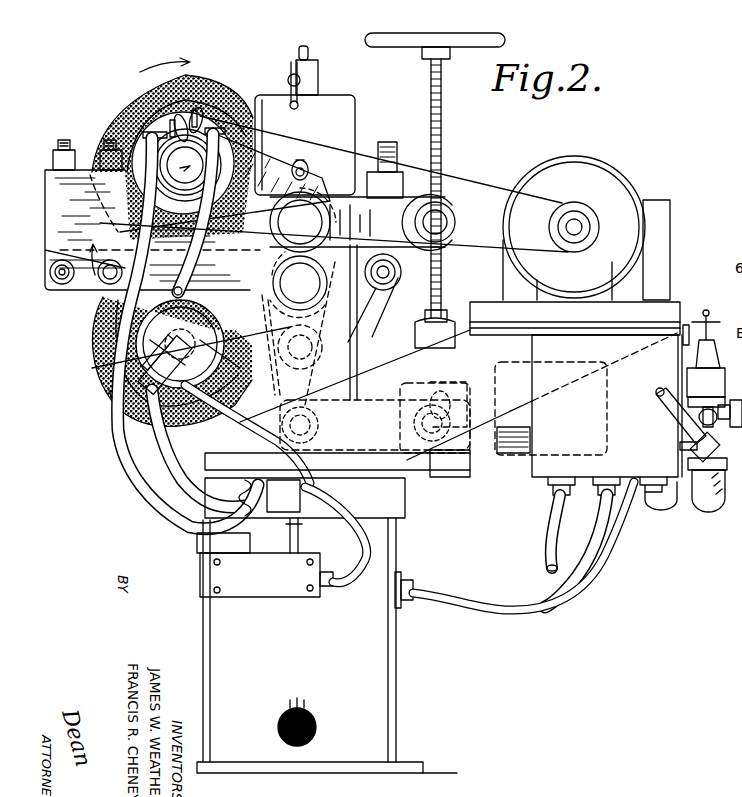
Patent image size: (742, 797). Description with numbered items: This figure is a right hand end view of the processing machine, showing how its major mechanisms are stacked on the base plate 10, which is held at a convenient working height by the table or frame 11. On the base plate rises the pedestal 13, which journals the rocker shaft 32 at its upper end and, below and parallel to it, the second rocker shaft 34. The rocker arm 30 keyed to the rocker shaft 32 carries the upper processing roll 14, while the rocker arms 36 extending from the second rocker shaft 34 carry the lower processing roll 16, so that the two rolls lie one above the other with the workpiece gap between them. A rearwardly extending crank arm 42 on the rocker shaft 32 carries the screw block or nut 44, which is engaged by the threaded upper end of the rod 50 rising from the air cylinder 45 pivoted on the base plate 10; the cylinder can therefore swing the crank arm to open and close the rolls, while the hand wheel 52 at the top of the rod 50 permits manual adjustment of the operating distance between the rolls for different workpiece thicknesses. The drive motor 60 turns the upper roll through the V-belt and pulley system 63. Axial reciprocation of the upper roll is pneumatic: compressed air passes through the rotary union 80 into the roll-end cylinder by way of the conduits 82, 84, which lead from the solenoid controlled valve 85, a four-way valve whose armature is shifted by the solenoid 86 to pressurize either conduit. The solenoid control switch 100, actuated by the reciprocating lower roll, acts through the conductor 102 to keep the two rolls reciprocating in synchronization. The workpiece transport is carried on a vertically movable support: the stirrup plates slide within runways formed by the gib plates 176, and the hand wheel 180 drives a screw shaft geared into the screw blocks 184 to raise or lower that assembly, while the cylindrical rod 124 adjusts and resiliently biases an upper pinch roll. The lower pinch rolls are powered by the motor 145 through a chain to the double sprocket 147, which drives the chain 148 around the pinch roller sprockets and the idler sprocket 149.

The base plate 10 is at (469, 486).
The table or frame 11 is at (410, 648).
The pedestal 13 is at (371, 358).
The processing roll 14 is at (130, 103).
The processing roll 16 is at (108, 392).
The rocker arm 30 is at (270, 172).
The rocker shaft 32 is at (303, 220).
The second rocker shaft 34 is at (298, 285).
The rocker arm 36 is at (278, 345).
The crank arm 42 is at (357, 222).
The screw block or nut 44 is at (456, 226).
The air cylinder 45 is at (440, 320).
The rod 50 is at (442, 278).
The hand wheel 52 is at (506, 41).
The drive motor 60 is at (599, 162).
The V-belt and pulley system 63 is at (470, 172).
The rotary union 80 is at (233, 168).
The conduit 82 is at (208, 116).
The conduit 84 is at (125, 122).
The solenoid controlled valve 85 is at (318, 490).
The solenoid 86 is at (283, 526).
The solenoid control switch 100 is at (176, 347).
The conductor 102 is at (207, 432).
The cylindrical rod 124 is at (389, 145).
The motor 145 is at (497, 455).
The double sprocket 147 is at (320, 423).
The chain 148 is at (390, 308).
The idler sprocket 149 is at (301, 333).
The gib plate 176 is at (350, 125).
The hand wheel 180 is at (290, 80).
The screw block 184 is at (318, 80).